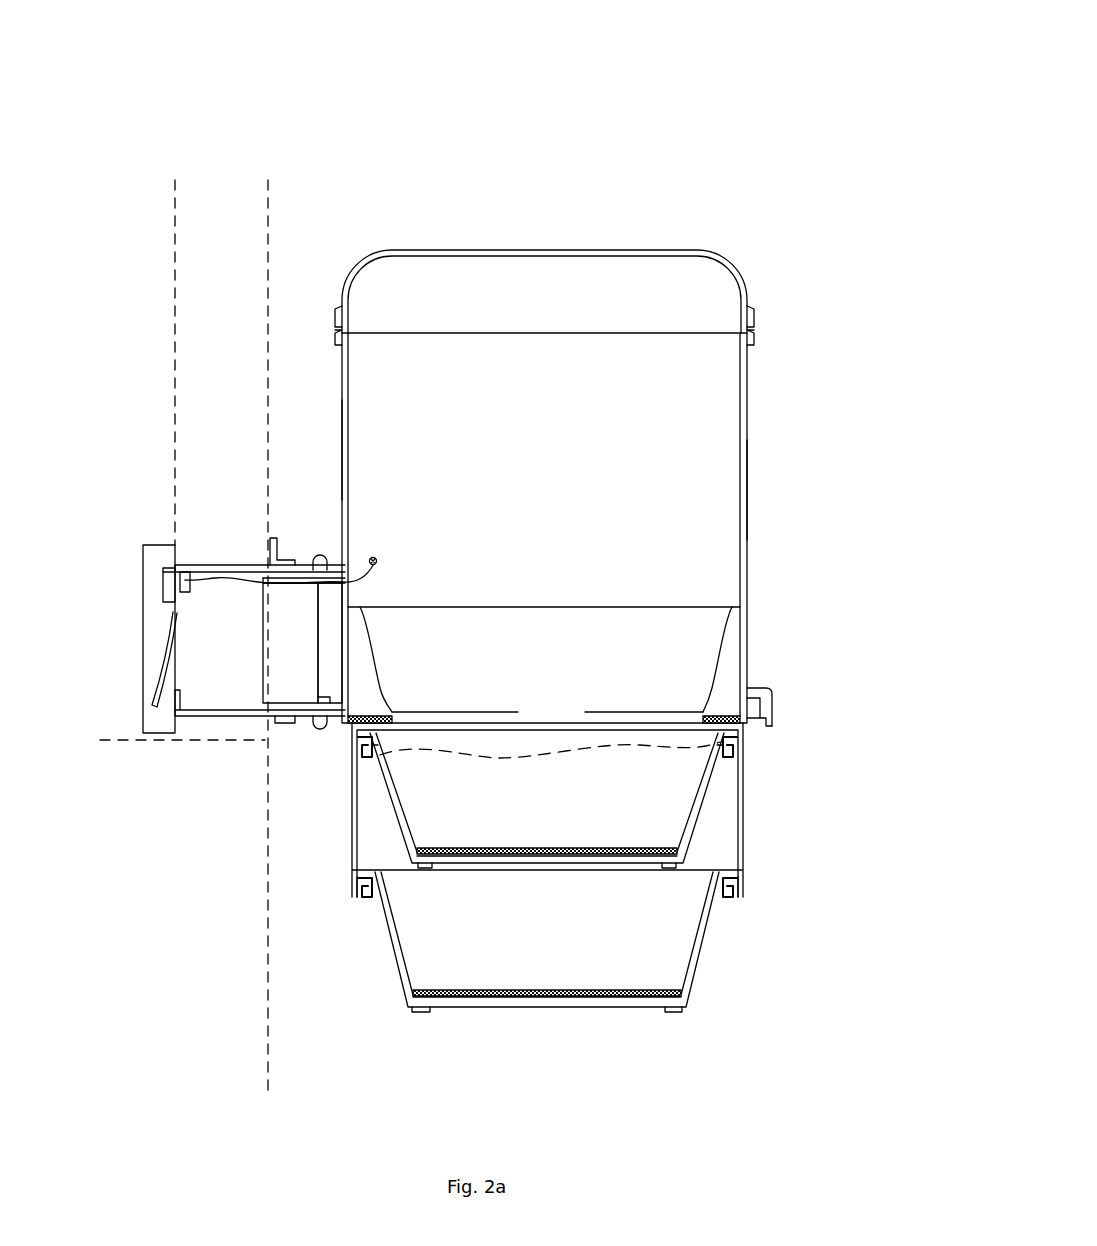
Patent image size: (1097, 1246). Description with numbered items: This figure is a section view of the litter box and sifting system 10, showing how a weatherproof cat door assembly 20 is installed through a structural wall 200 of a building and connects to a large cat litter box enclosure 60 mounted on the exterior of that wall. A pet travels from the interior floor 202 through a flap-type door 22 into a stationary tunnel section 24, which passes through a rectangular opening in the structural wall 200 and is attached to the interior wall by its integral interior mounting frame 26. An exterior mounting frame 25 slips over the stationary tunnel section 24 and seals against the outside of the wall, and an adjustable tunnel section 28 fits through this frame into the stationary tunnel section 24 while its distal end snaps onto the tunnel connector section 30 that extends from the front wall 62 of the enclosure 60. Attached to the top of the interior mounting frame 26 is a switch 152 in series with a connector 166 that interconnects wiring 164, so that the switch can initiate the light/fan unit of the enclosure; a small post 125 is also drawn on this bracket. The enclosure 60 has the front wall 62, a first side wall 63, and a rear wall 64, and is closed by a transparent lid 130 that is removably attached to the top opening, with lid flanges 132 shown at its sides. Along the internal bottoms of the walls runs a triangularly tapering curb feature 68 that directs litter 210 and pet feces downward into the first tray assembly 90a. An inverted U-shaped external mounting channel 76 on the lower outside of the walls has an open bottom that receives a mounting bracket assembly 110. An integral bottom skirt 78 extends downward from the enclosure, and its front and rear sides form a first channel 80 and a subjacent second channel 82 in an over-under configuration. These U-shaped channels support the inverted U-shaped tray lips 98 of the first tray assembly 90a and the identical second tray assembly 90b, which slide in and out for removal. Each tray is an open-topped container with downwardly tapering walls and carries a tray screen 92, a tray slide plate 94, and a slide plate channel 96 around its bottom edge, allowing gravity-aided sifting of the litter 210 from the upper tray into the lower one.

The litter box and sifting system 10 is at (718, 124).
The structural wall 200 is at (267, 218).
The interior floor 202 is at (110, 742).
The cat litter box enclosure 60 is at (774, 354).
The transparent lid 130 is at (725, 262).
The lid flange 132 is at (336, 299).
The first side wall 63 is at (713, 431).
The front wall 62 is at (342, 444).
The rear wall 64 is at (747, 493).
The curb feature 68 is at (363, 683).
The litter 210 is at (500, 758).
The mounting bracket assembly 110 is at (757, 700).
The mounting channel 76 is at (773, 716).
The bottom skirt 78 is at (352, 848).
The tray lip 98 is at (358, 744).
The first channel 80 is at (355, 778).
The first tray assembly 90a is at (698, 822).
The second tray assembly 90b is at (703, 950).
The second channel 82 is at (363, 898).
The slide plate channel 96 is at (424, 870).
The tray screen 92 is at (507, 995).
The tray slide plate 94 is at (578, 1003).
The flap-type door 22 is at (158, 683).
The switch 152 is at (162, 586).
The interior mounting frame 26 is at (168, 577).
The connector 166 is at (188, 582).
The stationary tunnel section 24 is at (188, 760).
The exterior mounting frame 25 is at (268, 730).
The post 125 is at (277, 549).
The cat door assembly 20 is at (257, 589).
The adjustable tunnel section 28 is at (298, 637).
The tunnel connector section 30 is at (330, 648).
The wiring 164 is at (376, 560).